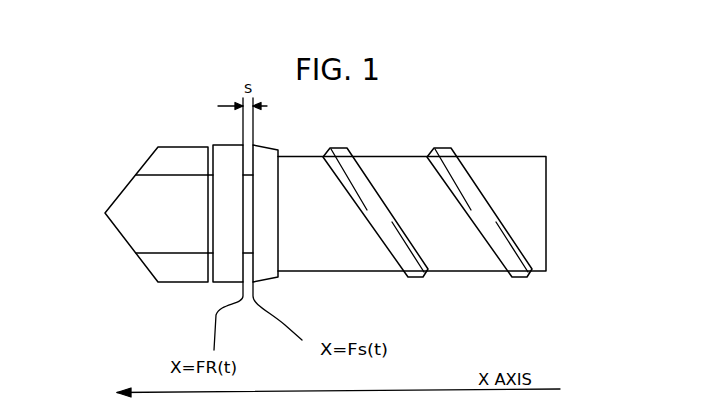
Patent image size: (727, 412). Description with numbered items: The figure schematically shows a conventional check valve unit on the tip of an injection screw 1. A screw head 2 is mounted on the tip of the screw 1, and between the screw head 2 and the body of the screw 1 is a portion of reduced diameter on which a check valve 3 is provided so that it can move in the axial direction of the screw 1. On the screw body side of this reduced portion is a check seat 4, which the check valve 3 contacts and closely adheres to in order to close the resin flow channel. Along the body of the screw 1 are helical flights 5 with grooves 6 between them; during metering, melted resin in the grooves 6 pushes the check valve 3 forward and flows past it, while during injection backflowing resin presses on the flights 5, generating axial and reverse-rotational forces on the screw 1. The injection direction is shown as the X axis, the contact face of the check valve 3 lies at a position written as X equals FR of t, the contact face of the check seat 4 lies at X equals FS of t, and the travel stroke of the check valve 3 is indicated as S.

The screw 1 is at (507, 168).
The screw head 2 is at (175, 155).
The check valve 3 is at (225, 277).
The check seat 4 is at (265, 275).
The flights 5 is at (487, 243).
The grooves 6 is at (375, 263).